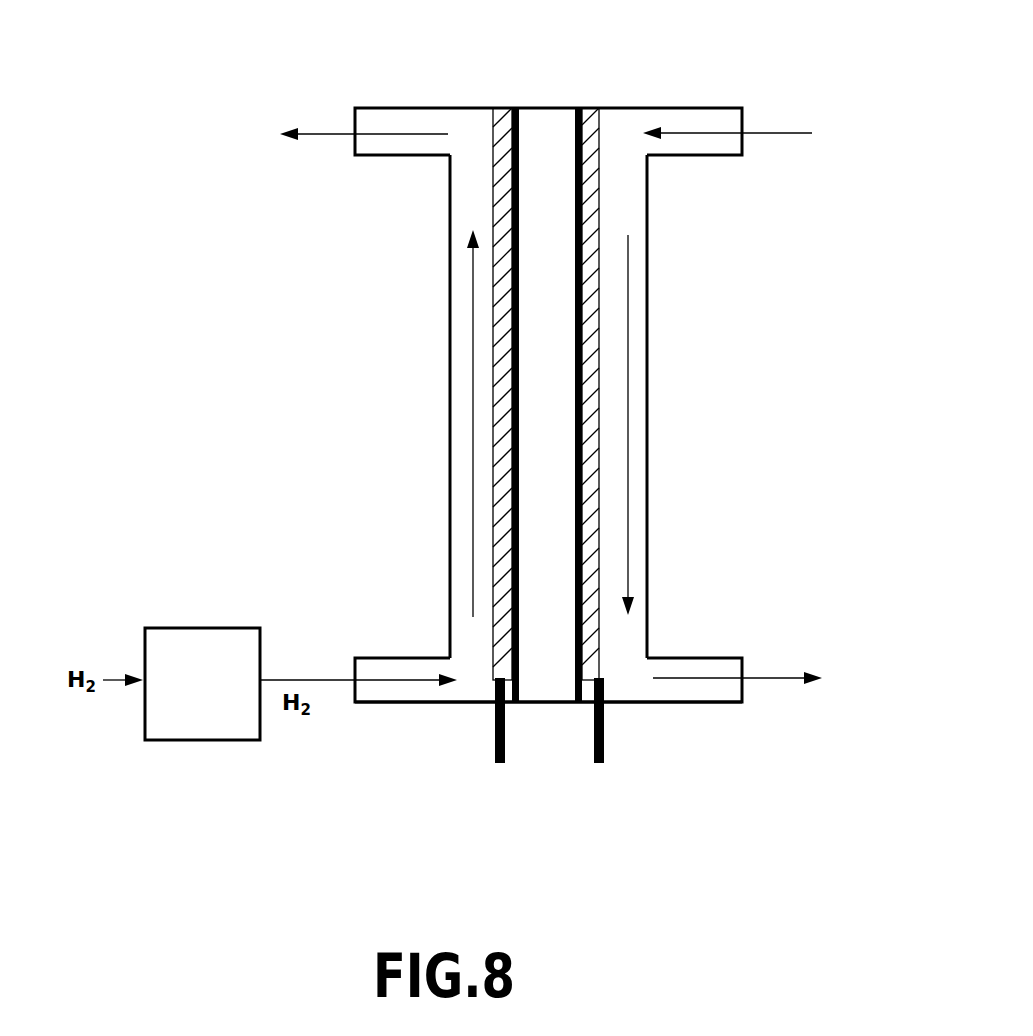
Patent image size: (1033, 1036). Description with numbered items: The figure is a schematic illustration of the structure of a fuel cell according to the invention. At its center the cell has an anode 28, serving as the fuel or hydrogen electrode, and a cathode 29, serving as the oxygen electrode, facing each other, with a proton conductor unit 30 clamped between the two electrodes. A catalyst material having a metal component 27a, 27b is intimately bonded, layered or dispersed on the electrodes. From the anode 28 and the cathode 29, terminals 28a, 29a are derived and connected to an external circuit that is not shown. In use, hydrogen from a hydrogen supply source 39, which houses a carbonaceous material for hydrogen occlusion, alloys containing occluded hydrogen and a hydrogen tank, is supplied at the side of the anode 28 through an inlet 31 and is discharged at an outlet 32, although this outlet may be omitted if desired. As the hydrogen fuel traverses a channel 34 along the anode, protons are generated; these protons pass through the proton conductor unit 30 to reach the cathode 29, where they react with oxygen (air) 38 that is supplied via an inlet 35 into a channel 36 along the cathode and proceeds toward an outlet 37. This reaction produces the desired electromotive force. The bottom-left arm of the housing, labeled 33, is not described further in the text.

The metal component 27a is at (513, 186).
The metal component 27b is at (585, 223).
The anode 28 is at (503, 312).
The terminal 28a is at (507, 757).
The cathode 29 is at (593, 172).
The terminal 29a is at (606, 754).
The proton conductor unit 30 is at (542, 135).
The inlet 31 is at (395, 688).
The outlet 32 is at (384, 128).
The anode gas inlet 33 is at (333, 677).
The channel 34 is at (487, 468).
The inlet 35 is at (700, 130).
The channel 36 is at (614, 446).
The outlet 37 is at (711, 673).
The oxygen (air) 38 is at (780, 135).
The hydrogen supply source 39 is at (198, 645).